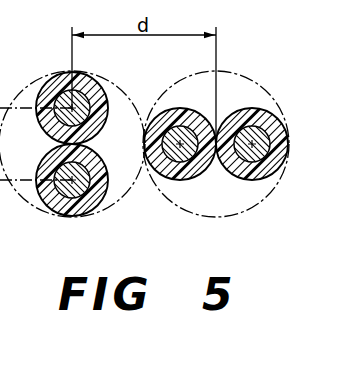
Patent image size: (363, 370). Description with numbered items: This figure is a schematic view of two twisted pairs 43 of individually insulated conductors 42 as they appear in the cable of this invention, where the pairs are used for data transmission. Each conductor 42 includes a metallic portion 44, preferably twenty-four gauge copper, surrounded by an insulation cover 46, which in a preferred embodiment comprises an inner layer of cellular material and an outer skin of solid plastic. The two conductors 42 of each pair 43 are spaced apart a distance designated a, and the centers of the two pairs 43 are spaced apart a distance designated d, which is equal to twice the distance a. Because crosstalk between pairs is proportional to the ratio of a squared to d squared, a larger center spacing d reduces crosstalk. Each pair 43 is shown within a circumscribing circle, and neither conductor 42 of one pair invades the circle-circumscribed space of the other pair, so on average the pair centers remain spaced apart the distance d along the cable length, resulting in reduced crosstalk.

The individually insulated conductor 42 is at (103, 138).
The twisted pair 43 is at (47, 67).
The metallic portion 44 is at (254, 128).
The insulation cover 46 is at (278, 146).